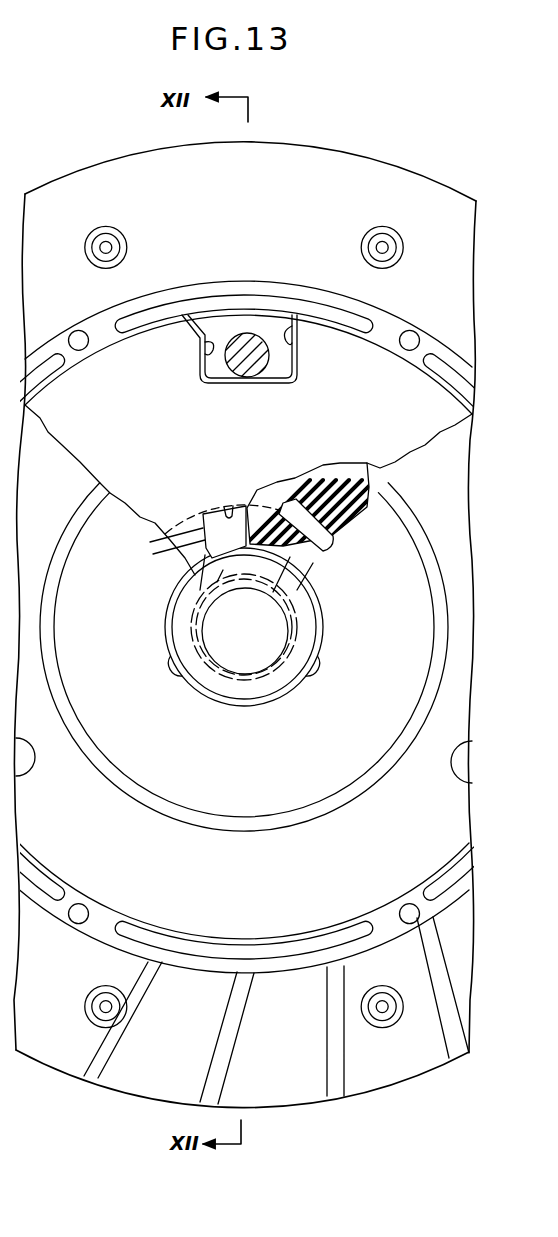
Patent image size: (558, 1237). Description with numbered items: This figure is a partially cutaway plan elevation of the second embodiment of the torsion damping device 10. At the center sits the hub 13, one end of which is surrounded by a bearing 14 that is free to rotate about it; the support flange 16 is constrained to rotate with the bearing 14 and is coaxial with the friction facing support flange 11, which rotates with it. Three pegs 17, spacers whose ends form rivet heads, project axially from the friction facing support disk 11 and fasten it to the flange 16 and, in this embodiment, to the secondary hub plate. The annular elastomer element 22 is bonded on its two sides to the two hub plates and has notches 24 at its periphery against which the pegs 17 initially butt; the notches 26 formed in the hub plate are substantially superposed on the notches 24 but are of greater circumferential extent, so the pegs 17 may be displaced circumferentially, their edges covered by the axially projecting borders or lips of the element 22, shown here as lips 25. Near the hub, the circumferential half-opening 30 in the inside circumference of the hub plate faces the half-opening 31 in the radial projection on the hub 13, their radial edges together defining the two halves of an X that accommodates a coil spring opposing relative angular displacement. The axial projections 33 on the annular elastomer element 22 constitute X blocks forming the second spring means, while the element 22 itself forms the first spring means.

The device 10 is at (421, 166).
The friction facing support flange 11 is at (395, 334).
The hub 13 is at (250, 702).
The bearing 14 is at (164, 622).
The support flange 16 is at (149, 465).
The pegs 17 is at (246, 376).
The annular elastomer element 22 is at (371, 506).
The notches 24 is at (291, 355).
The bracket walls 25 is at (219, 345).
The notches 26 is at (204, 353).
The half-opening 30 is at (230, 510).
The half-opening 31 is at (224, 542).
The axial projections 33 is at (296, 531).